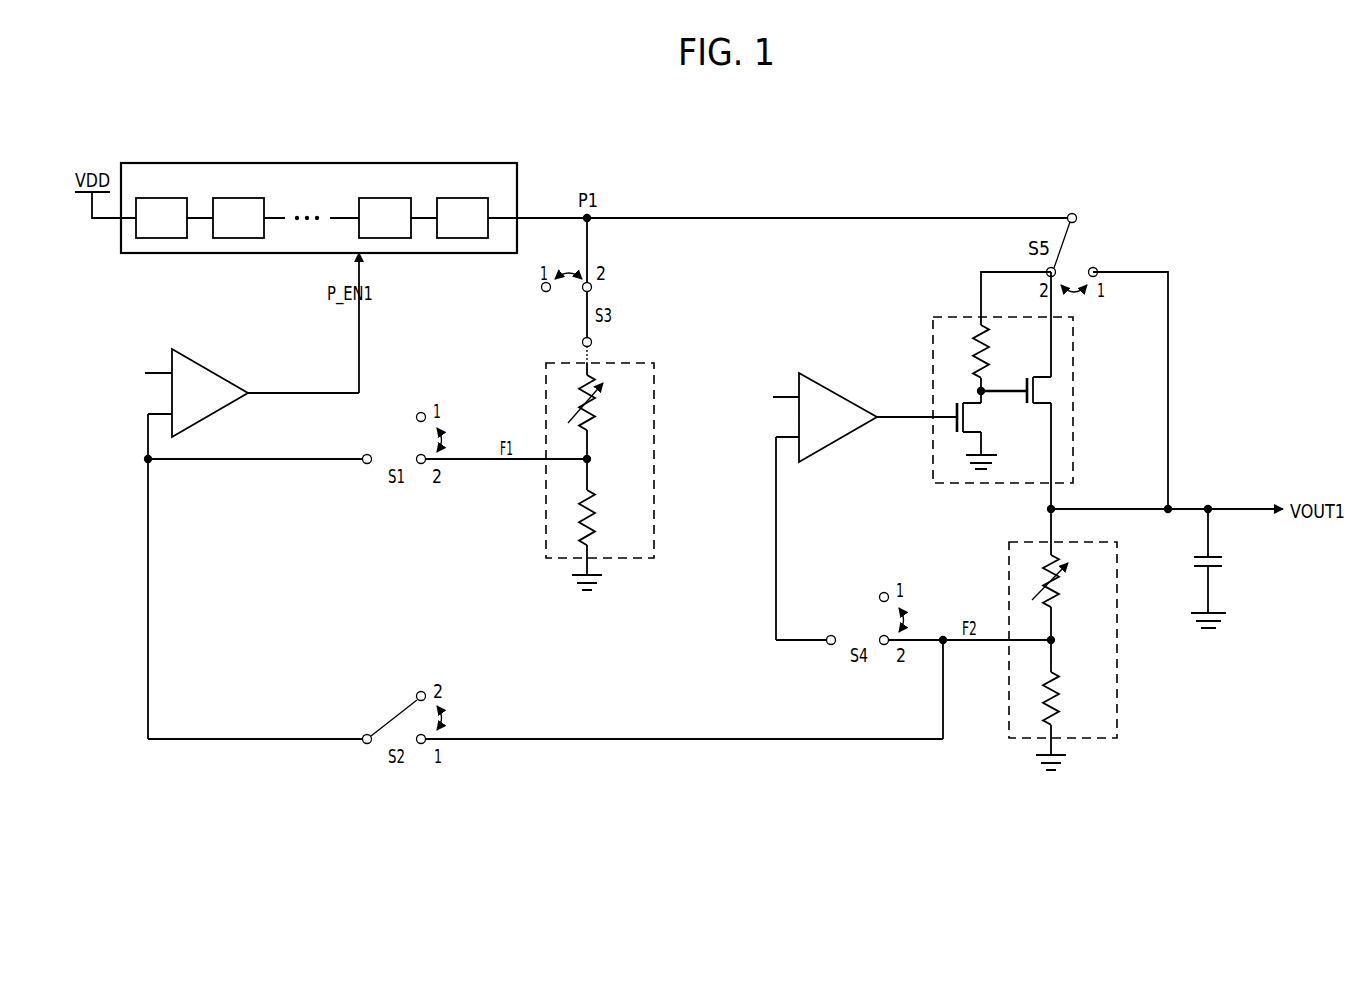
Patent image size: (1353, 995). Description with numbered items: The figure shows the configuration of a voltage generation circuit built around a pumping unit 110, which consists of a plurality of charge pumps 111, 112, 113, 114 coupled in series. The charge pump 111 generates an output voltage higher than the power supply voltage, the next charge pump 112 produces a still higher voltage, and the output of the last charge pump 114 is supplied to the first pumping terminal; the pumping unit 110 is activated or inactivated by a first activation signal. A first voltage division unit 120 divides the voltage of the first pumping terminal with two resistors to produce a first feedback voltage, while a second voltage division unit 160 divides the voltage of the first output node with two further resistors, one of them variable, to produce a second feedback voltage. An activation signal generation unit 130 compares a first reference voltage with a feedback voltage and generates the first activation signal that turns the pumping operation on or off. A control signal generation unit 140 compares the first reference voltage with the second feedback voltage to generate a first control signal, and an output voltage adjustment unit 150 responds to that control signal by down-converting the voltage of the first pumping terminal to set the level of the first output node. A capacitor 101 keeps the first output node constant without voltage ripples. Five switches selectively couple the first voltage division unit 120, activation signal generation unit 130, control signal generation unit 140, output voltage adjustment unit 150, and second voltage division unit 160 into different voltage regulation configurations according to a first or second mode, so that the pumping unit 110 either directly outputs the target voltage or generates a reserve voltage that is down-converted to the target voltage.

The capacitor 101 is at (1224, 562).
The pumping unit 110 is at (354, 195).
The charge pump 111 is at (153, 196).
The charge pump 112 is at (232, 196).
The charge pump 113 is at (377, 196).
The charge pump 114 is at (455, 196).
The first voltage division unit 120 is at (612, 364).
The activation signal generation unit 130 is at (200, 363).
The control signal generation unit 140 is at (833, 386).
The output voltage adjustment unit 150 is at (952, 317).
The second voltage division unit 160 is at (1075, 542).